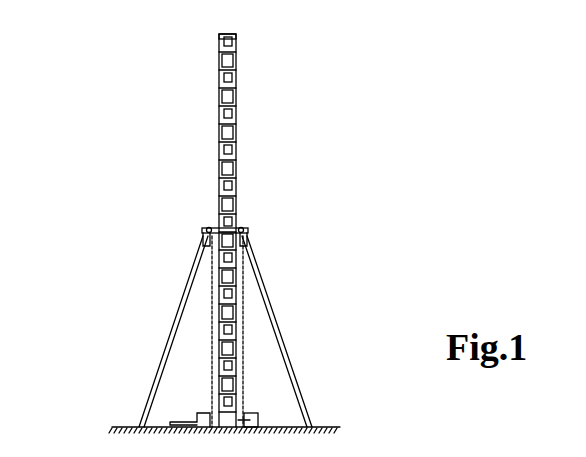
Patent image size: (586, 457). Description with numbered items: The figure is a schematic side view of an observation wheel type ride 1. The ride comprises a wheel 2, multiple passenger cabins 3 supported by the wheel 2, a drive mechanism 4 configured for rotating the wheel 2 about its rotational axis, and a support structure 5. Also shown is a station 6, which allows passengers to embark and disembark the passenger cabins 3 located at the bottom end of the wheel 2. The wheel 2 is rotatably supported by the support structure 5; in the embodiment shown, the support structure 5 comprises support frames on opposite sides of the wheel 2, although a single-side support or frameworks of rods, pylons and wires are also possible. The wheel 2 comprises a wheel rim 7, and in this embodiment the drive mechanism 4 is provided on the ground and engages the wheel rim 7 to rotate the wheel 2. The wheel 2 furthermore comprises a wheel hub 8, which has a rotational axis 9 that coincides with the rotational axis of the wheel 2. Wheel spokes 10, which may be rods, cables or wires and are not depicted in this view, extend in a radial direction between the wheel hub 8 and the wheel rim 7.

The observation wheel type ride 1 is at (125, 103).
The wheel 2 is at (237, 33).
The passenger cabins 3 is at (222, 73).
The drive mechanism 4 is at (270, 408).
The support structure 5 is at (272, 255).
The station 6 is at (177, 410).
The wheel rim 7 is at (220, 42).
The wheel hub 8 is at (183, 203).
The rotational axis 9 is at (182, 225).
The wheel spokes 10 is at (253, 100).